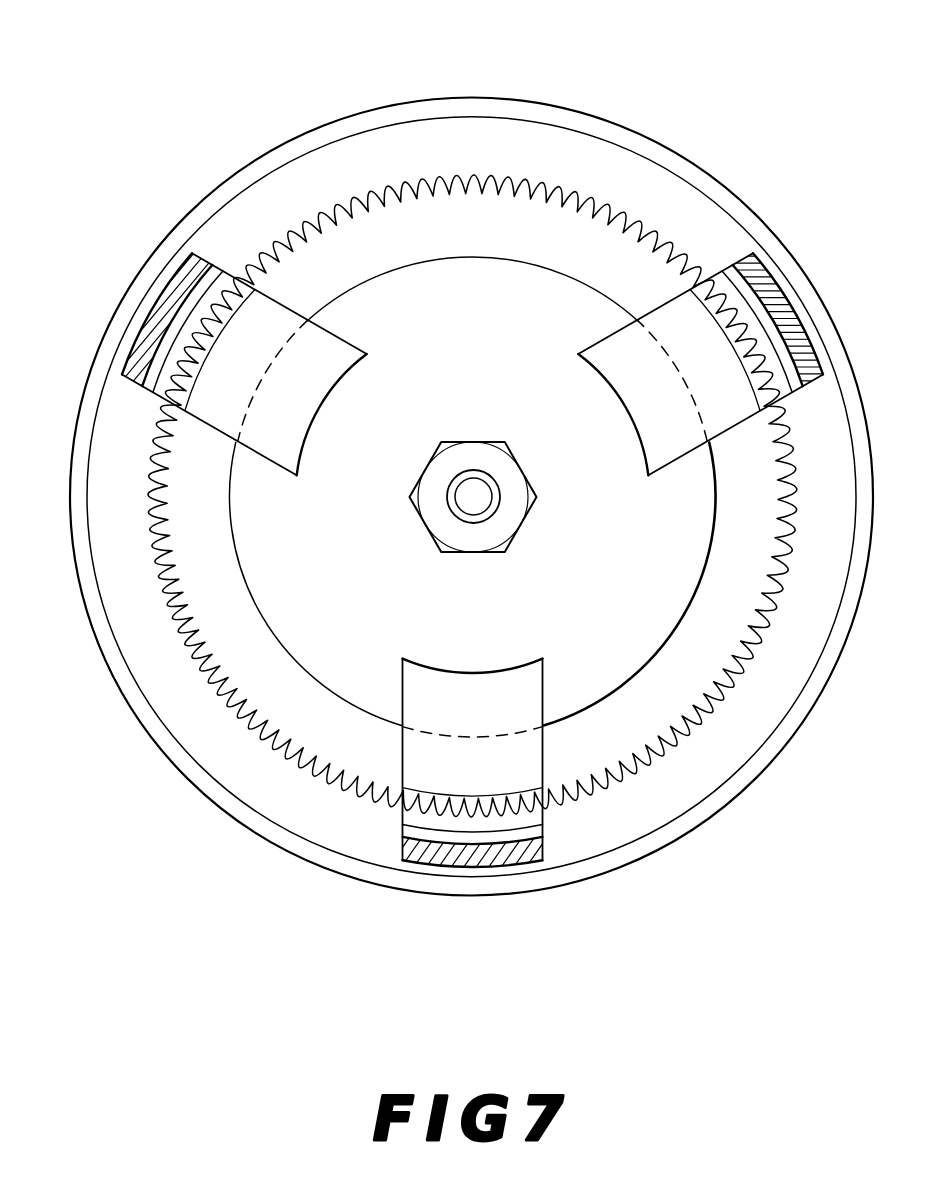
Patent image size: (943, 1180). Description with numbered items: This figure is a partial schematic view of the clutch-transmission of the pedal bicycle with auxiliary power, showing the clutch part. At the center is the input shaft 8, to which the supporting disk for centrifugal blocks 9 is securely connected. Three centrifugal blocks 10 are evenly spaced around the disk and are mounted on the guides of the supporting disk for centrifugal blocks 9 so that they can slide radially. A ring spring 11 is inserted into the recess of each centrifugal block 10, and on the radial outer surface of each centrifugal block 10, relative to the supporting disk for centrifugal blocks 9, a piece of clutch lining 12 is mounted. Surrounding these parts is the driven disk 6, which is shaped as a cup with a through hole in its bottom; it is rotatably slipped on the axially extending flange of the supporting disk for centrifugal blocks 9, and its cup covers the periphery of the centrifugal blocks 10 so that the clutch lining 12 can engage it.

The driven disk 6 is at (172, 233).
The input shaft 8 is at (475, 472).
The supporting disk for centrifugal blocks 9 is at (443, 275).
The centrifugal blocks 10 is at (265, 325).
The ring spring 11 is at (512, 183).
The clutch lining 12 is at (752, 258).